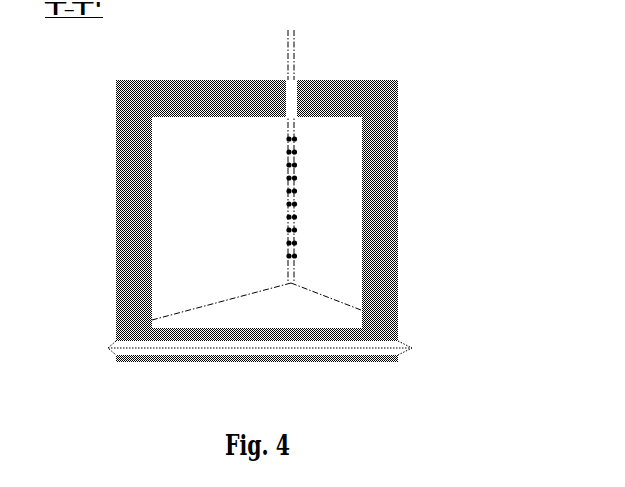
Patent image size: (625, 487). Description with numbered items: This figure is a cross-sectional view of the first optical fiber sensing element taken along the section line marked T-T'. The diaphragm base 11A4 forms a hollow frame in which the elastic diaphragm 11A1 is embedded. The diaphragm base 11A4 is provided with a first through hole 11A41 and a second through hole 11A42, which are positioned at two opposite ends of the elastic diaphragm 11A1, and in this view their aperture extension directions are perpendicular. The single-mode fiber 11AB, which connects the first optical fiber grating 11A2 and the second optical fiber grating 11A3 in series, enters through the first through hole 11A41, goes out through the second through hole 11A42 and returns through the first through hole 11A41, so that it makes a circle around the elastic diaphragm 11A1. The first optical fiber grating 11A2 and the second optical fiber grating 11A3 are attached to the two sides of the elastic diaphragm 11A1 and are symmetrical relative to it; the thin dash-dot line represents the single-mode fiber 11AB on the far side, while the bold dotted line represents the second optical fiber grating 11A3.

The diaphragm base 11A4 is at (137, 110).
The elastic diaphragm 11A1 is at (213, 172).
The single-mode fiber 11AB is at (295, 50).
The first through hole 11A41 is at (297, 80).
The first optical fiber grating 11A2 is at (297, 190).
The second optical fiber grating 11A3 is at (287, 207).
The second through hole 11A42 is at (390, 352).